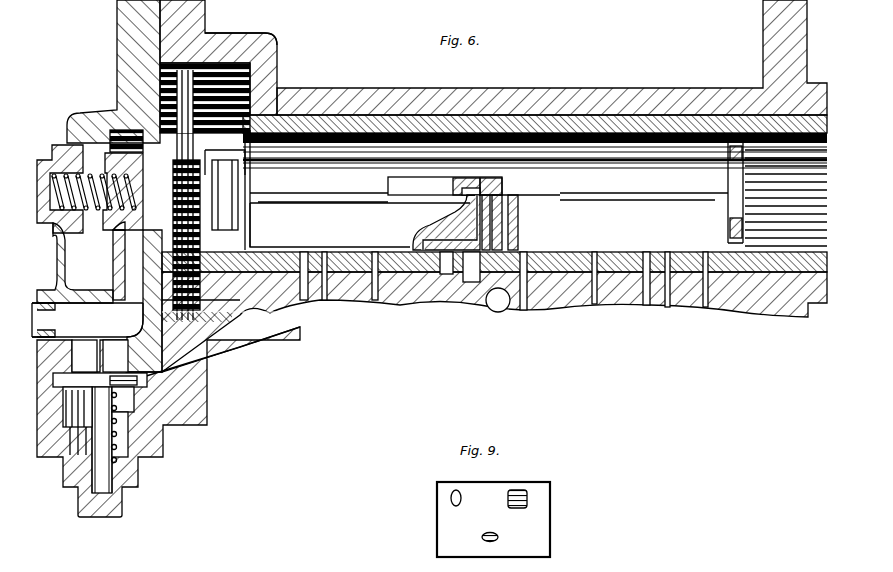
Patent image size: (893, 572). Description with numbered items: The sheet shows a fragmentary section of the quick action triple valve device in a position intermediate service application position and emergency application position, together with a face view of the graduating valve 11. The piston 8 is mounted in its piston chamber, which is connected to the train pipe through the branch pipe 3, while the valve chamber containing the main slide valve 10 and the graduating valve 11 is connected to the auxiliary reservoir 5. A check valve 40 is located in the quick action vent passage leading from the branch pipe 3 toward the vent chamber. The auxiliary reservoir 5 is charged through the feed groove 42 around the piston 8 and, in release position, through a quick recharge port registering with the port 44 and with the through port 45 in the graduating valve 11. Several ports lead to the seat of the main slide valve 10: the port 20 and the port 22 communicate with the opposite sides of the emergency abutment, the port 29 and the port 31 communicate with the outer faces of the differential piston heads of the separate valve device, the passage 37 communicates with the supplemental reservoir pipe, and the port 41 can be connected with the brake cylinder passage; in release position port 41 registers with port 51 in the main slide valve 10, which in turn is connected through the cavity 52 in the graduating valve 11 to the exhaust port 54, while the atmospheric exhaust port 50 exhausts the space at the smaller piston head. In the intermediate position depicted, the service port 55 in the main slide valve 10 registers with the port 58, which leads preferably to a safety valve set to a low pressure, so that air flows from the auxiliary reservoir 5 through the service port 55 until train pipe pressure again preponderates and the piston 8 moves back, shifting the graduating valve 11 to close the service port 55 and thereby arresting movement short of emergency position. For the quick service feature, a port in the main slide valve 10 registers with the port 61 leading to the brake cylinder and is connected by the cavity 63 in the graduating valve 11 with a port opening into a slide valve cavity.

In FIG. 6, the branch pipe 3 is at (57, 315).
In FIG. 6, the auxiliary reservoir 5 is at (225, 297).
In FIG. 6, the piston 8 is at (200, 253).
In FIG. 6, the main slide valve 10 is at (643, 213).
In FIG. 6, the graduating valve 11 is at (502, 192).
In FIG. 9, the graduating valve 11 is at (538, 524).
In FIG. 6, the port 20 is at (667, 308).
In FIG. 6, the port 22 is at (325, 300).
In FIG. 6, the port 29 is at (705, 308).
In FIG. 6, the port 31 is at (592, 305).
In FIG. 6, the passage 37 is at (300, 310).
In FIG. 6, the check valve 40 is at (70, 378).
In FIG. 6, the port 41 is at (525, 312).
In FIG. 6, the feed groove 42 is at (257, 48).
In FIG. 6, the port 44 is at (375, 297).
In FIG. 9, the through port 45 is at (451, 498).
In FIG. 6, the atmospheric exhaust port 50 is at (445, 275).
In FIG. 6, the port 51 is at (500, 240).
In FIG. 6, the cavity 52 is at (453, 188).
In FIG. 9, the cavity 52 is at (523, 489).
In FIG. 6, the exhaust port 54 is at (468, 282).
In FIG. 6, the service port 55 is at (512, 215).
In FIG. 6, the port 58 is at (500, 312).
In FIG. 6, the port 61 is at (645, 305).
In FIG. 9, the cavity 63 is at (490, 542).